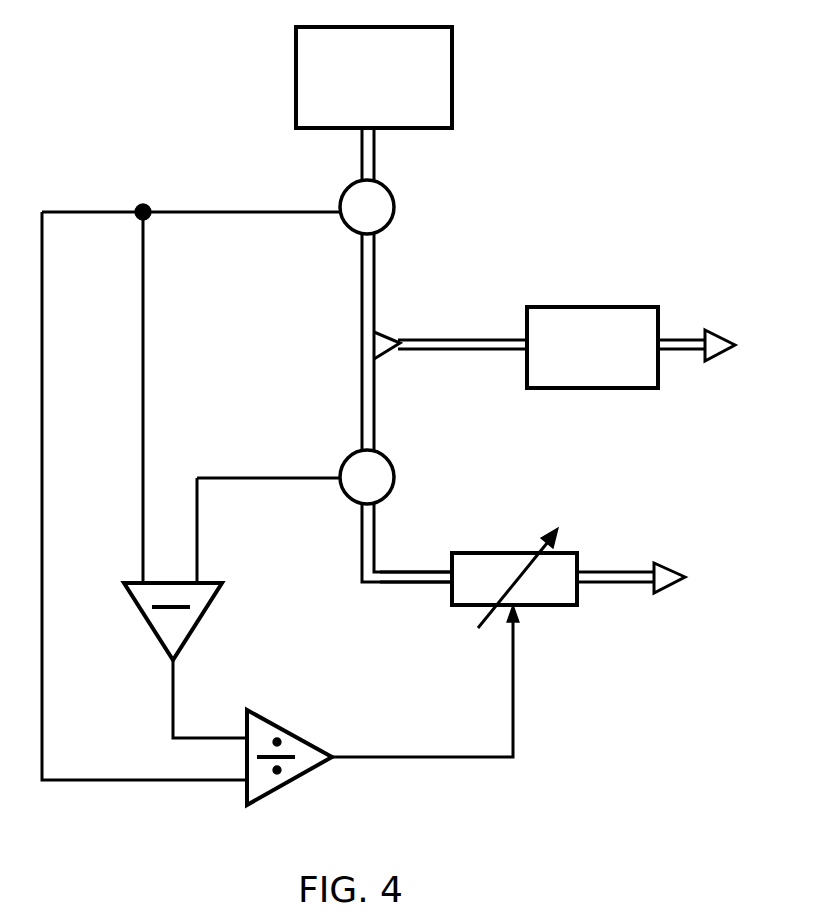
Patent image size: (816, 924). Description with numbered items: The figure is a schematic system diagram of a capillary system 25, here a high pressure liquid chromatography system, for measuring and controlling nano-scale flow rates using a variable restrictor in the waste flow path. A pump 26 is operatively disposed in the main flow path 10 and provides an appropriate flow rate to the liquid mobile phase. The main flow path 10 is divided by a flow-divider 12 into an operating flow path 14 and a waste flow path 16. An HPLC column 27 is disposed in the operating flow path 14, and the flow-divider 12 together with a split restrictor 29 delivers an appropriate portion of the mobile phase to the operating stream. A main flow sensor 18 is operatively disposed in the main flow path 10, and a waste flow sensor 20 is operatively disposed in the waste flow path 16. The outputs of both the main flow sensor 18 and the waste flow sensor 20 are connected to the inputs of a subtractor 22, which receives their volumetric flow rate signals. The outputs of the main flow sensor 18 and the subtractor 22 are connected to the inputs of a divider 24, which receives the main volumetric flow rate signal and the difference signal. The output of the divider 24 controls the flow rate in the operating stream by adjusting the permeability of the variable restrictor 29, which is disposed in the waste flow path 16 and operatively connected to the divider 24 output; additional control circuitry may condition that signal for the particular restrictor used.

The main flow path 10 is at (362, 308).
The flow-divider 12 is at (378, 335).
The operating flow path 14 is at (452, 337).
The waste flow path 16 is at (427, 585).
The main flow sensor 18 is at (393, 197).
The waste flow sensor 20 is at (393, 467).
The subtractor 22 is at (208, 610).
The divider 24 is at (293, 730).
The capillary system 25 is at (133, 116).
The pump 26 is at (453, 82).
The HPLC column 27 is at (638, 305).
The variable restrictor 29 is at (553, 606).